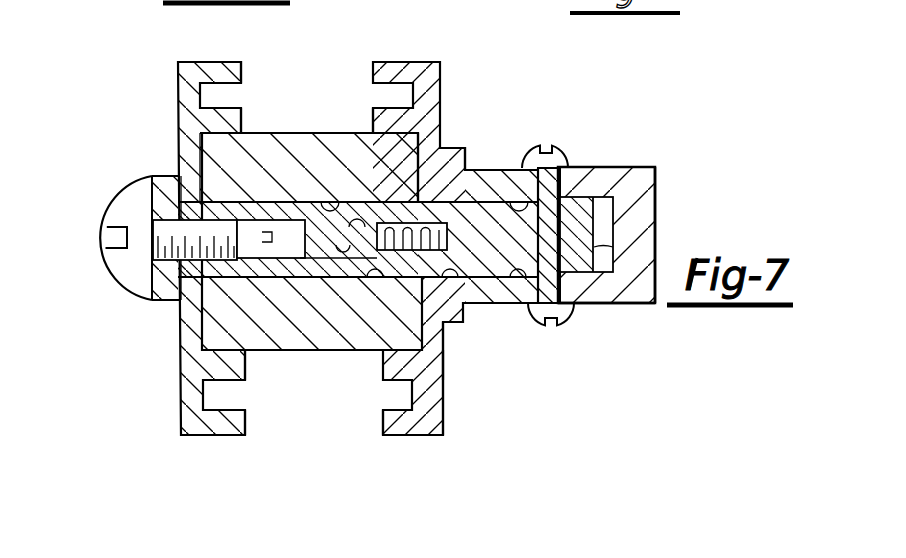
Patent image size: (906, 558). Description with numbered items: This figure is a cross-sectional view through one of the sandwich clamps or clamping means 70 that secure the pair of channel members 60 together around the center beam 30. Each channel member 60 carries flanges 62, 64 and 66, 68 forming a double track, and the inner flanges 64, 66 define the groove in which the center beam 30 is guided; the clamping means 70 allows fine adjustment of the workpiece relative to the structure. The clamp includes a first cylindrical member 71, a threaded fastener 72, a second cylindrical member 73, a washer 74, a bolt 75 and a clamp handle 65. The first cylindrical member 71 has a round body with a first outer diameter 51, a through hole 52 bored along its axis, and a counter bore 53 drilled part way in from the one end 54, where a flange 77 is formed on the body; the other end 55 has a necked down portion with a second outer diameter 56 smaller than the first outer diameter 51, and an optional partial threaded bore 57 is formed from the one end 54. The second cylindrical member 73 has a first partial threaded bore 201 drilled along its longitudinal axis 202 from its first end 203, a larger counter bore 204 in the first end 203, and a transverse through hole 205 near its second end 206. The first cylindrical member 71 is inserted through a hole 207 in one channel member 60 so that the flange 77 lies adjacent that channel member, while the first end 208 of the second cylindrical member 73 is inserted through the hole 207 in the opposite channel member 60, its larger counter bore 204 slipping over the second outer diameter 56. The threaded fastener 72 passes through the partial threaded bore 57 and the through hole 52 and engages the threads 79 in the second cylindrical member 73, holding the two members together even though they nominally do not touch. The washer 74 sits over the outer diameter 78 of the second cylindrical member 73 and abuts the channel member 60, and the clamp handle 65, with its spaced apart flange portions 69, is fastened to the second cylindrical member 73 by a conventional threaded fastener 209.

The center beam 30 is at (297, 160).
The first outer diameter 51 is at (200, 200).
The through hole 52 is at (432, 222).
The counter bore 53 is at (286, 265).
The one end 54 is at (186, 214).
The other end 55 is at (443, 372).
The second outer diameter 56 is at (358, 230).
The partial threaded bore 57 is at (192, 216).
The channel member 60 is at (193, 200).
The flange 62 is at (242, 80).
The inner flange 64 is at (242, 130).
The clamp handle 65 is at (656, 185).
The inner flange 66 is at (245, 380).
The flange 68 is at (248, 428).
The flange portions 69 is at (583, 197).
The clamping means 70 is at (103, 278).
The first cylindrical member 71 is at (180, 295).
The threaded fastener 72 is at (375, 268).
The second cylindrical member 73 is at (482, 268).
The washer 74 is at (495, 180).
The bolt 75 is at (115, 217).
The flange 77 is at (160, 303).
The outer diameter 78 is at (528, 305).
The threads 79 is at (524, 146).
The first partial threaded bore 201 is at (492, 200).
The longitudinal axis 202 is at (563, 190).
The first end 203 is at (410, 190).
The larger counter bore 204 is at (463, 168).
The transverse through hole 205 is at (633, 167).
The second end 206 is at (656, 233).
The hole 207 is at (196, 207).
The first end 208 is at (338, 268).
The threaded fastener 209 is at (573, 313).